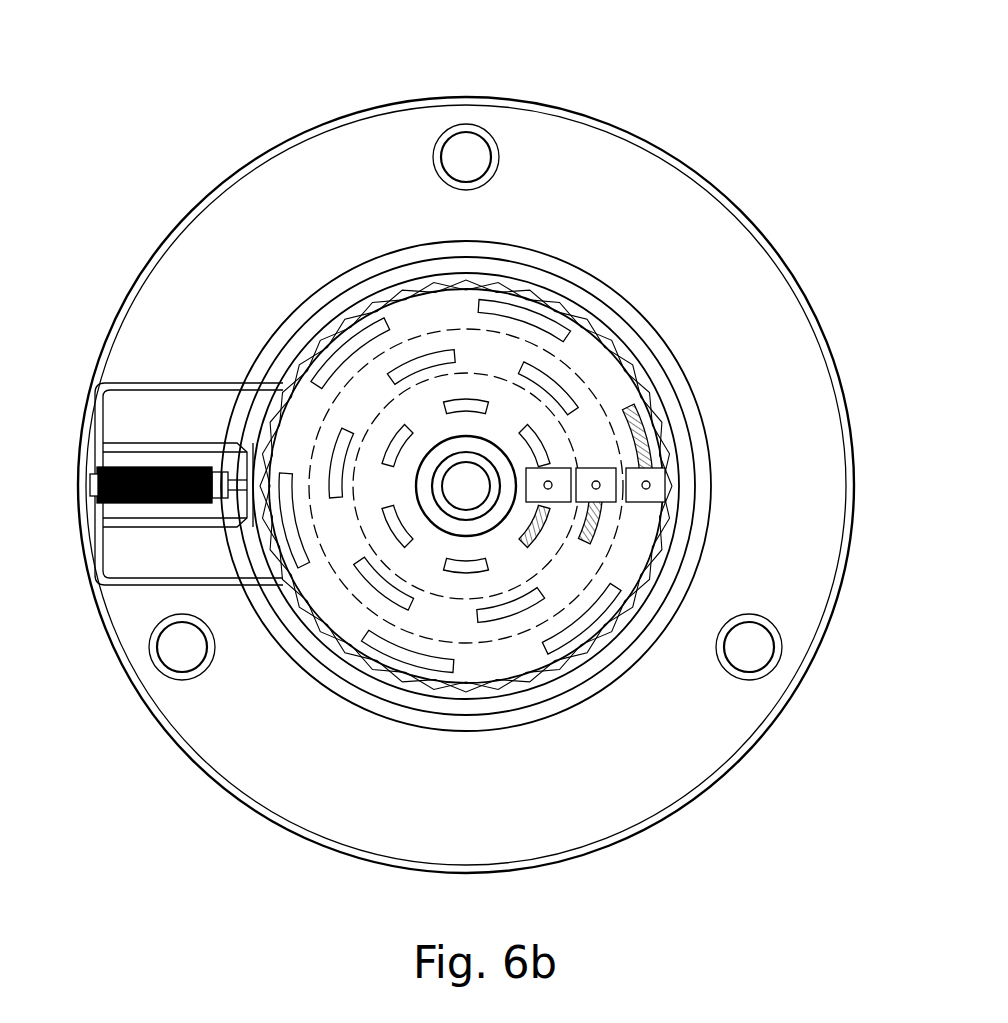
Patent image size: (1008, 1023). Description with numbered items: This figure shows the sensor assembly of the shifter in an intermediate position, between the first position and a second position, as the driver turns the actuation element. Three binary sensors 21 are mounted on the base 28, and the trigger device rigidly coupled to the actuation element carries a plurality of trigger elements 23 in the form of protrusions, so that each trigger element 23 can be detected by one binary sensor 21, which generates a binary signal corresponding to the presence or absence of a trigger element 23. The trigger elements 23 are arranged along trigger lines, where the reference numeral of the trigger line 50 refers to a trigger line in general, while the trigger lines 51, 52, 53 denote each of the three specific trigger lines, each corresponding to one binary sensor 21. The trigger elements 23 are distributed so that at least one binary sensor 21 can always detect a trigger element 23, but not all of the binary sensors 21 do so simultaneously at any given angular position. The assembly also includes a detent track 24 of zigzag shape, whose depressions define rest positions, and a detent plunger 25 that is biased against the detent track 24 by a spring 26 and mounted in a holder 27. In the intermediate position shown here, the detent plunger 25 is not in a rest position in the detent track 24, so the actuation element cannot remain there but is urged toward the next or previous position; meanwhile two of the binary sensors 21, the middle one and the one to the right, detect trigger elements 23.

The binary sensor 21 is at (660, 480).
The trigger element 23 is at (645, 425).
The detent track 24 is at (265, 445).
The detent plunger 25 is at (228, 487).
The spring 26 is at (93, 477).
The holder 27 is at (113, 508).
The base 28 is at (793, 362).
The trigger line 50 is at (362, 327).
The trigger line 51 is at (472, 650).
The trigger line 52 is at (491, 375).
The trigger line 53 is at (432, 416).